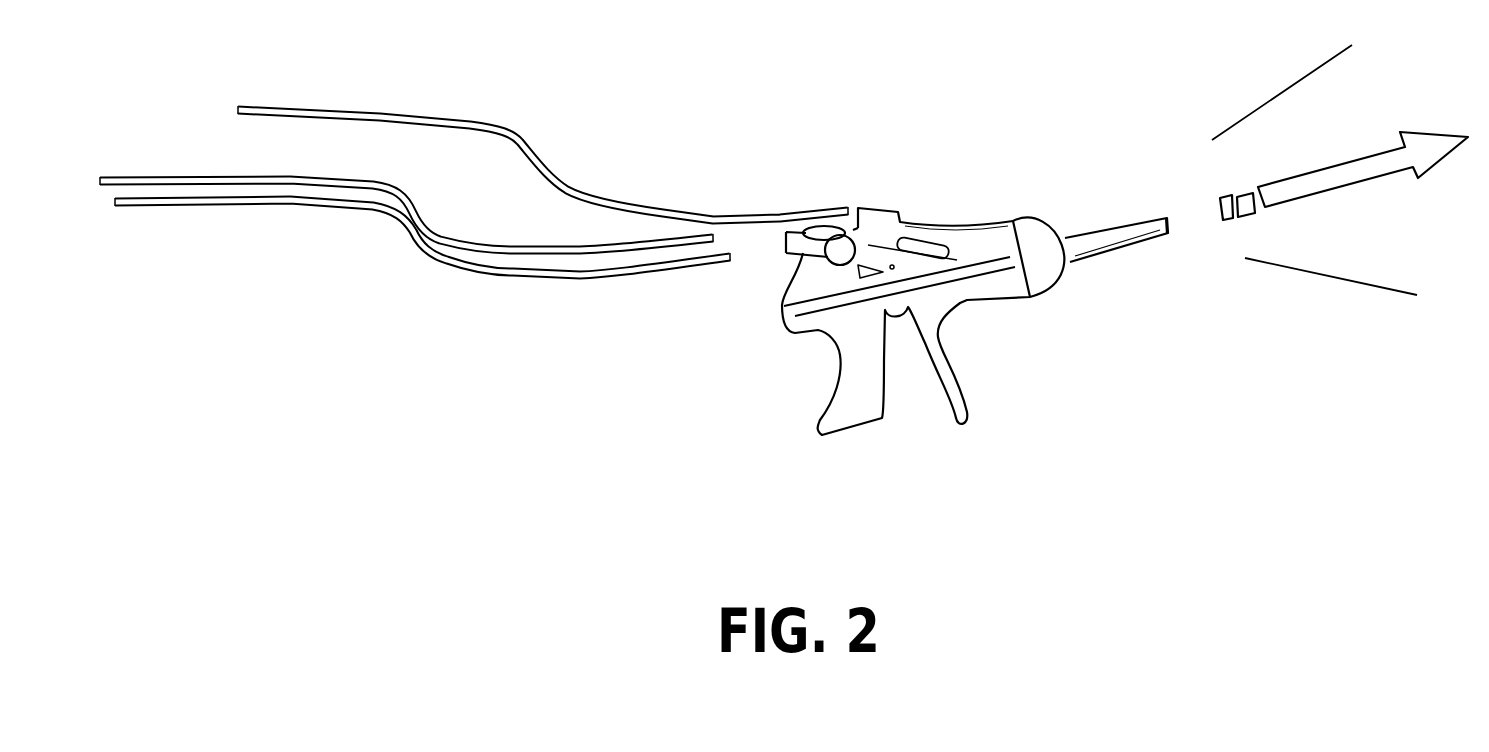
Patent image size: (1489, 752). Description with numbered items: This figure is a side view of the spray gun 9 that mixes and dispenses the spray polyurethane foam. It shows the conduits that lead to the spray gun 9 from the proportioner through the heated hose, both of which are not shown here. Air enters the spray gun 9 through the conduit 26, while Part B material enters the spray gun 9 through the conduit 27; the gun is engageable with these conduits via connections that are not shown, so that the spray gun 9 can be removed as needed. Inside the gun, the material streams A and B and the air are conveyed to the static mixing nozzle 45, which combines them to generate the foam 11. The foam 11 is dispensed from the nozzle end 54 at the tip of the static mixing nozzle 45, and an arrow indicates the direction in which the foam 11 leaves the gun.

The spray gun 9 is at (983, 216).
The conduit 26 is at (543, 152).
The conduit 27 is at (487, 243).
The static mixing nozzle 45 is at (1127, 228).
The nozzle end 54 is at (1166, 240).
The foam 11 is at (1301, 170).